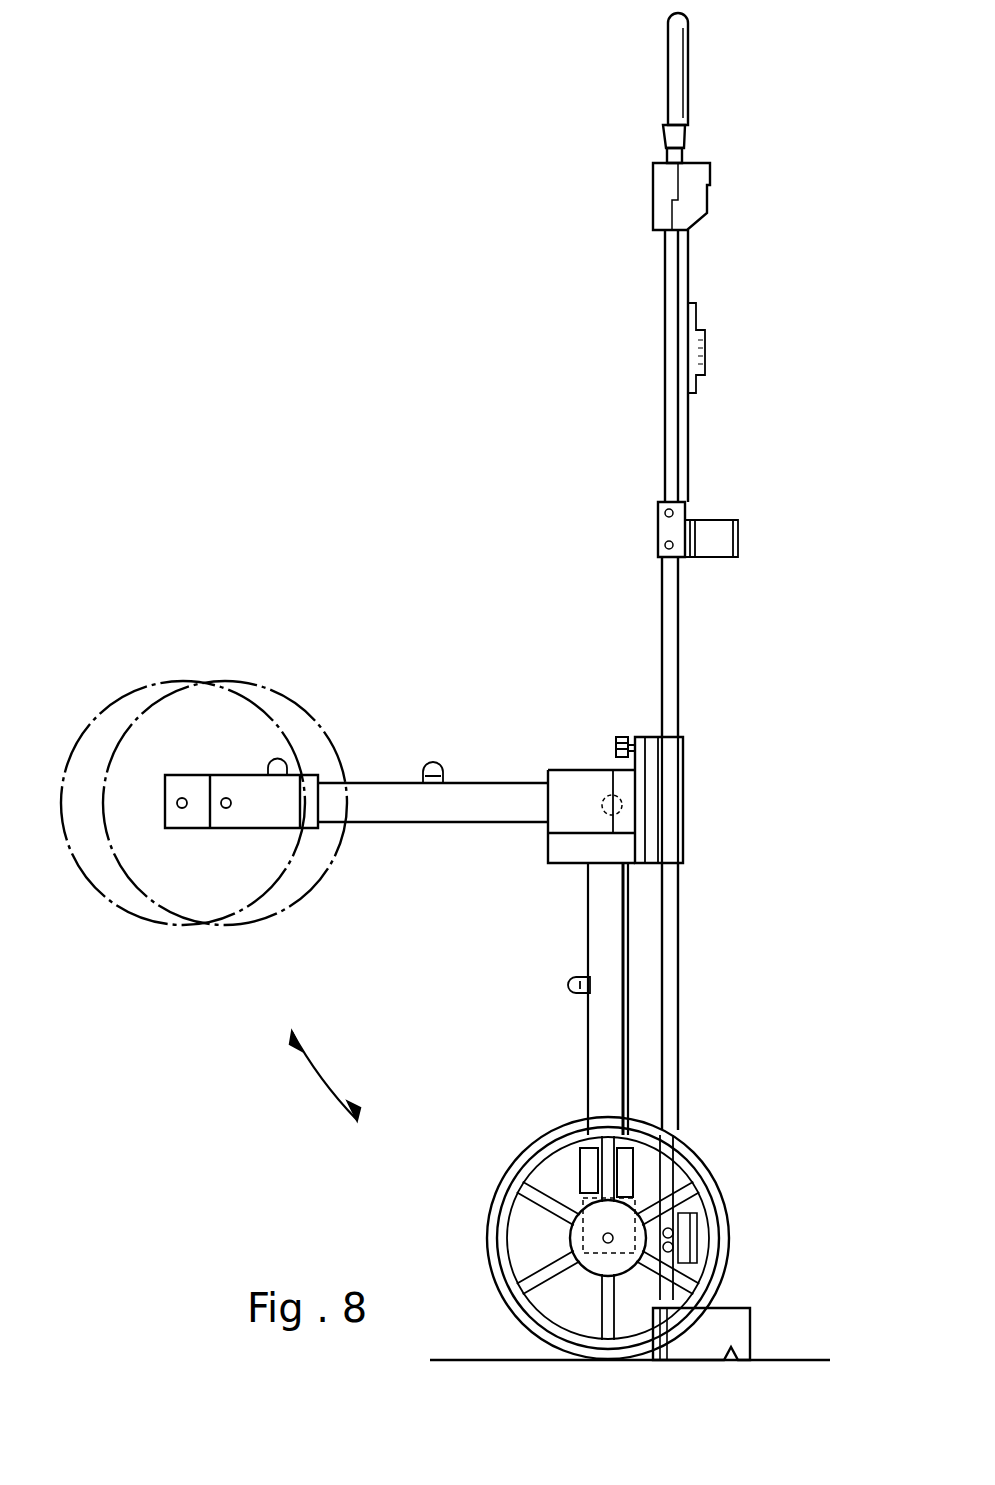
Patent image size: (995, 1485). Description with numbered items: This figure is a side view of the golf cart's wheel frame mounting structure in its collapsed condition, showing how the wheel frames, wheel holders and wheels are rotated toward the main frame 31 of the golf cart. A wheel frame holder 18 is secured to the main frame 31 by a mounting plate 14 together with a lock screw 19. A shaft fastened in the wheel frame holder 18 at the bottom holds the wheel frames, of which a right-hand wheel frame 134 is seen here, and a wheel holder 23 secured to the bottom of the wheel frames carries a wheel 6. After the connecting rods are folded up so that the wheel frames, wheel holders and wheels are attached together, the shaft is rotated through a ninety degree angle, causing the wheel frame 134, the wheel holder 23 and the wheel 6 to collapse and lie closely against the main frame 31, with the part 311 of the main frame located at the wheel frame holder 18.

The wheel 6 is at (488, 1230).
The mounting plate 14 is at (682, 815).
The wheel frame holder 18 is at (620, 768).
The lock screw 19 is at (622, 737).
The wheel holder 23 is at (580, 1167).
The main frame 31 is at (673, 717).
The rod lower end 311 is at (662, 735).
The right-hand wheel frame 134 is at (588, 1055).